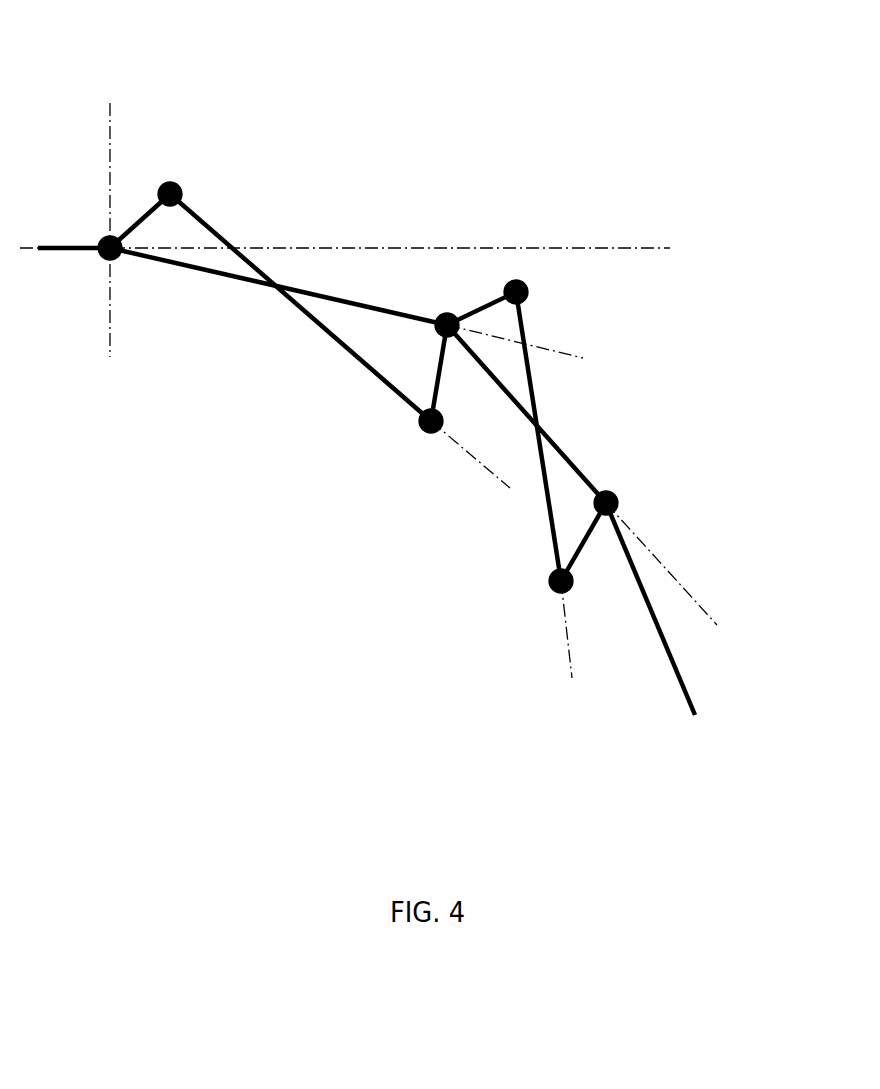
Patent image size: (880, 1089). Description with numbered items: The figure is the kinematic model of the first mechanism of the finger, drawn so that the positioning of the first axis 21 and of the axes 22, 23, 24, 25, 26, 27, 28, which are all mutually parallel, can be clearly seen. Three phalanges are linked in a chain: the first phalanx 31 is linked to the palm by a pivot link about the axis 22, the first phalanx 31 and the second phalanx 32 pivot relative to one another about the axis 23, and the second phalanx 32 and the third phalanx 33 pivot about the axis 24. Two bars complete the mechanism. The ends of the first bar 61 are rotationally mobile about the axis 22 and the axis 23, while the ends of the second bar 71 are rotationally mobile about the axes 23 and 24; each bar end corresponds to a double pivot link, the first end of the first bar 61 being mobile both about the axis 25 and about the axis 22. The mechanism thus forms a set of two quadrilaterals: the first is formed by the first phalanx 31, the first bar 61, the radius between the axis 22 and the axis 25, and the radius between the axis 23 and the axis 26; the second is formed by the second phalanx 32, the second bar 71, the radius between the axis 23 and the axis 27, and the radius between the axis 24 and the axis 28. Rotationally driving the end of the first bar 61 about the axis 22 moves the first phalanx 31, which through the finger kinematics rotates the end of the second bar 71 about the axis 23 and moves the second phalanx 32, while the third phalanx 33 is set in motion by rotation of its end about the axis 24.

The first axis 21 is at (585, 245).
The axis 22 is at (102, 258).
The axis 23 is at (447, 313).
The axis 24 is at (610, 493).
The axis 25 is at (170, 182).
The axis 26 is at (427, 435).
The axis 27 is at (516, 280).
The axis 28 is at (553, 593).
The first phalanx 31 is at (232, 278).
The second phalanx 32 is at (573, 457).
The third phalanx 33 is at (640, 588).
The first bar 61 is at (220, 230).
The second bar 71 is at (537, 393).